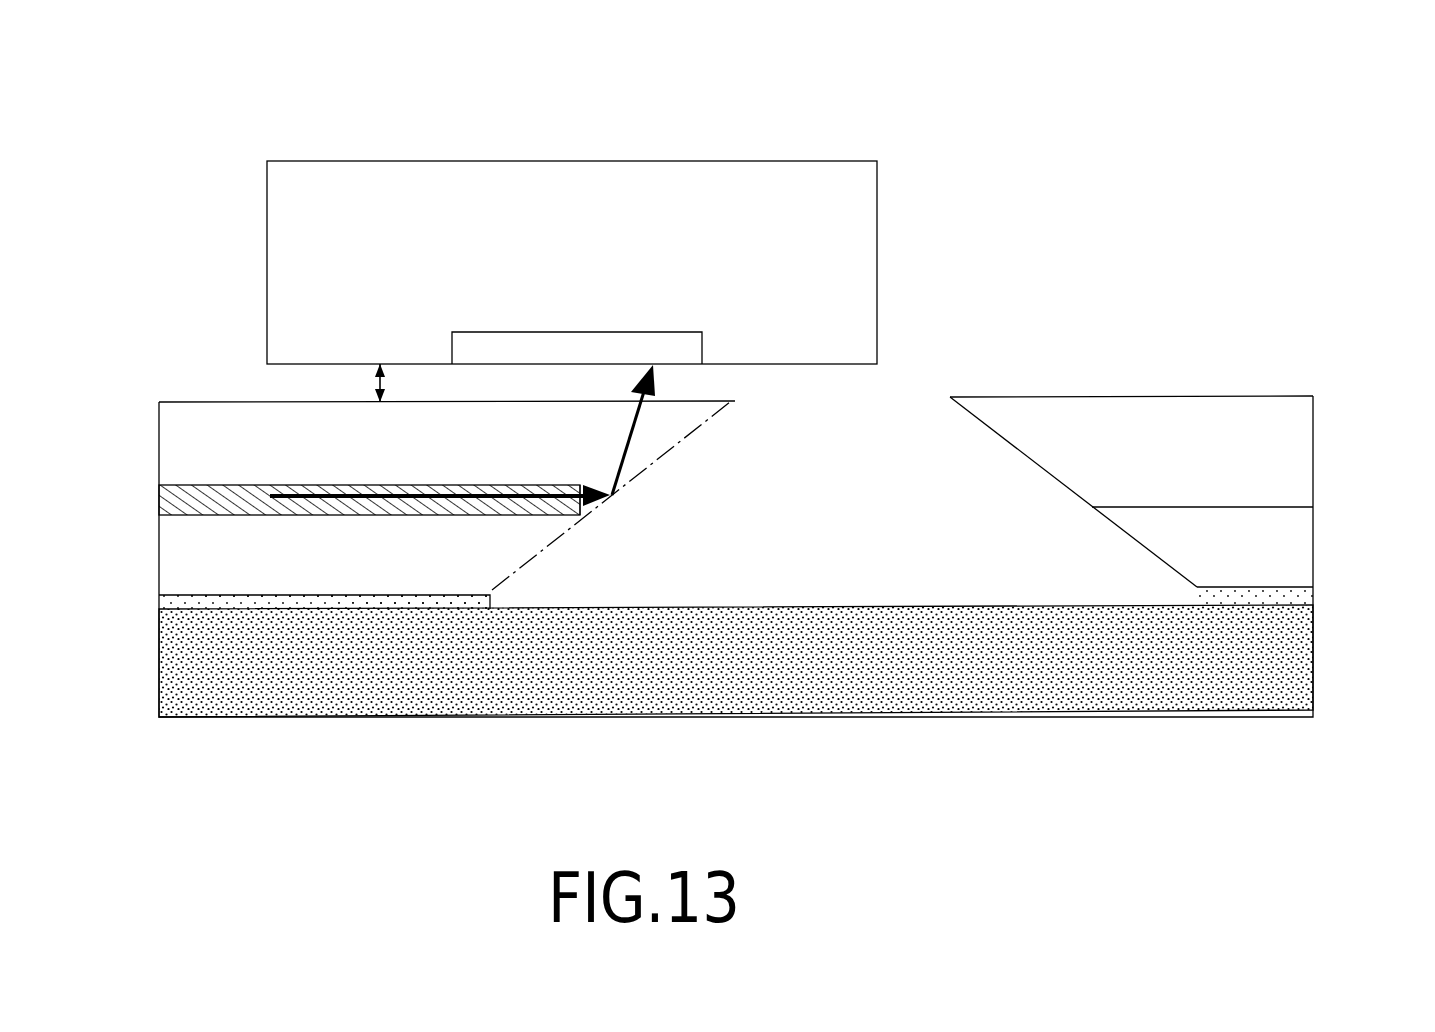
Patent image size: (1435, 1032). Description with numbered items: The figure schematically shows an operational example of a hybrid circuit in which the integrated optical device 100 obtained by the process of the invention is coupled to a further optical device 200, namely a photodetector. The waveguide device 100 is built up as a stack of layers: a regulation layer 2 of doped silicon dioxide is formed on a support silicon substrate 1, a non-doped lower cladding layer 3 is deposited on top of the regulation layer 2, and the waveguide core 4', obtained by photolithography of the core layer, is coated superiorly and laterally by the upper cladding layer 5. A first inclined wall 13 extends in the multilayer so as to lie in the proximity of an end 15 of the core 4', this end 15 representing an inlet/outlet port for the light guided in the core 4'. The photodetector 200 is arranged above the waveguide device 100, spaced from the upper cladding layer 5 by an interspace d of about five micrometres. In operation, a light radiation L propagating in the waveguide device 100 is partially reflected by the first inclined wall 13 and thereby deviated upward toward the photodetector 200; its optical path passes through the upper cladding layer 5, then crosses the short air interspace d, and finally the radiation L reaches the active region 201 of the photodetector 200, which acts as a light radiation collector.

The optical device 200 is at (463, 187).
The active region 201 is at (603, 345).
The interspace d is at (375, 384).
The integrated optical device 100 is at (250, 772).
The upper cladding layer 5 is at (190, 438).
The core 4' is at (326, 468).
The lower cladding layer 3 is at (188, 548).
The regulation layer 2 is at (170, 602).
The support silicon substrate 1 is at (180, 658).
The first inclined wall 13 is at (635, 497).
The end of the core 15 is at (595, 503).
The light radiation L is at (330, 496).